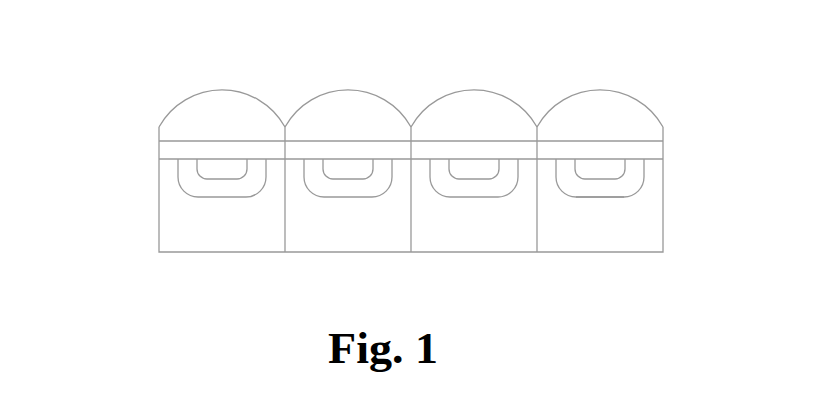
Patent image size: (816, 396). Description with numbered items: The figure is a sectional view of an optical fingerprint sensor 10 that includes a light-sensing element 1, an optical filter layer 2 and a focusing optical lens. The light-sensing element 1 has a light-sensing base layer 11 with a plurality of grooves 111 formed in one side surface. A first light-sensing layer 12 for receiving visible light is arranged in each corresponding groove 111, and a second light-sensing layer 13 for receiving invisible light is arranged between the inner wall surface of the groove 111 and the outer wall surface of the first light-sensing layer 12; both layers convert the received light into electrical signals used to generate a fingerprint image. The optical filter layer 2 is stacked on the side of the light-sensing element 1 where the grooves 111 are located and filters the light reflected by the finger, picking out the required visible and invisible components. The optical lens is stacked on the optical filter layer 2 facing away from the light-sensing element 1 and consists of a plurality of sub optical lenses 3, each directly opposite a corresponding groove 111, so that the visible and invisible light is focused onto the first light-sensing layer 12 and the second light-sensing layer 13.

The optical fingerprint sensor 10 is at (150, 45).
The light-sensing element 1 is at (383, 209).
The light-sensing base layer 11 is at (185, 227).
The groove 111 is at (588, 195).
The first light-sensing layer 12 is at (225, 168).
The second light-sensing layer 13 is at (190, 171).
The optical filter layer 2 is at (172, 150).
The sub optical lens 3 is at (216, 117).